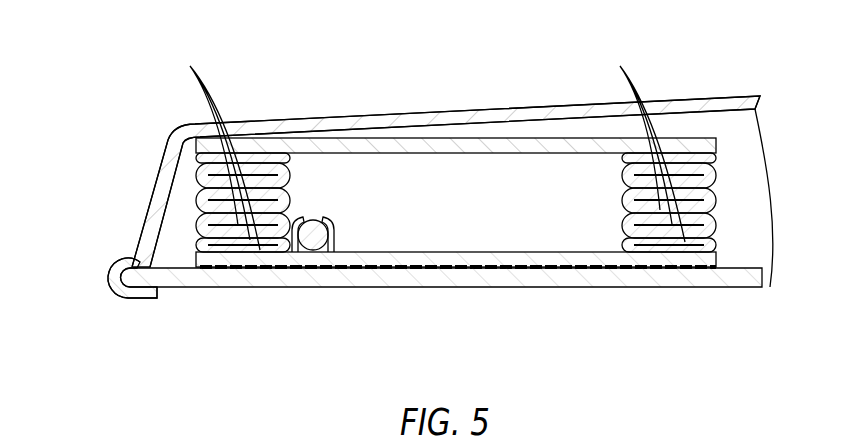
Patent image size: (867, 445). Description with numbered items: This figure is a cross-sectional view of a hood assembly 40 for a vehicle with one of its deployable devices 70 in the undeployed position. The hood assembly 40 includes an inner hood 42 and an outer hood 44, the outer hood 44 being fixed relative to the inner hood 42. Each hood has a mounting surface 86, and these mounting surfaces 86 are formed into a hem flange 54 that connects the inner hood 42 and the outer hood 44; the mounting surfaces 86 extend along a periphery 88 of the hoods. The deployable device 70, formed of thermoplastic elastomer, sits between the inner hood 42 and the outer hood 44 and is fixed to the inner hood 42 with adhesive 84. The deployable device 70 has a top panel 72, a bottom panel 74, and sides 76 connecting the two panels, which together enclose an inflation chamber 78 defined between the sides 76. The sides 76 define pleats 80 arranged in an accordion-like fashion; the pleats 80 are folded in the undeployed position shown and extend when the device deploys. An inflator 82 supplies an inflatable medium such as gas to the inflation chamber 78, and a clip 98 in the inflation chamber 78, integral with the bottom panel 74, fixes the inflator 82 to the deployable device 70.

The hood assembly 40 is at (527, 53).
The inner hood 42 is at (250, 285).
The outer hood 44 is at (370, 112).
The hem flange 54 is at (112, 297).
The deployable device 70 is at (782, 100).
The top panel 72 is at (460, 138).
The bottom panel 74 is at (587, 272).
The sides 76 is at (192, 172).
The inflation chamber 78 is at (503, 253).
The pleats 80 is at (425, 151).
The inflator 82 is at (312, 245).
The adhesive 84 is at (717, 267).
The mounting surface 86 is at (137, 262).
The periphery 88 is at (147, 185).
The clip 98 is at (337, 232).